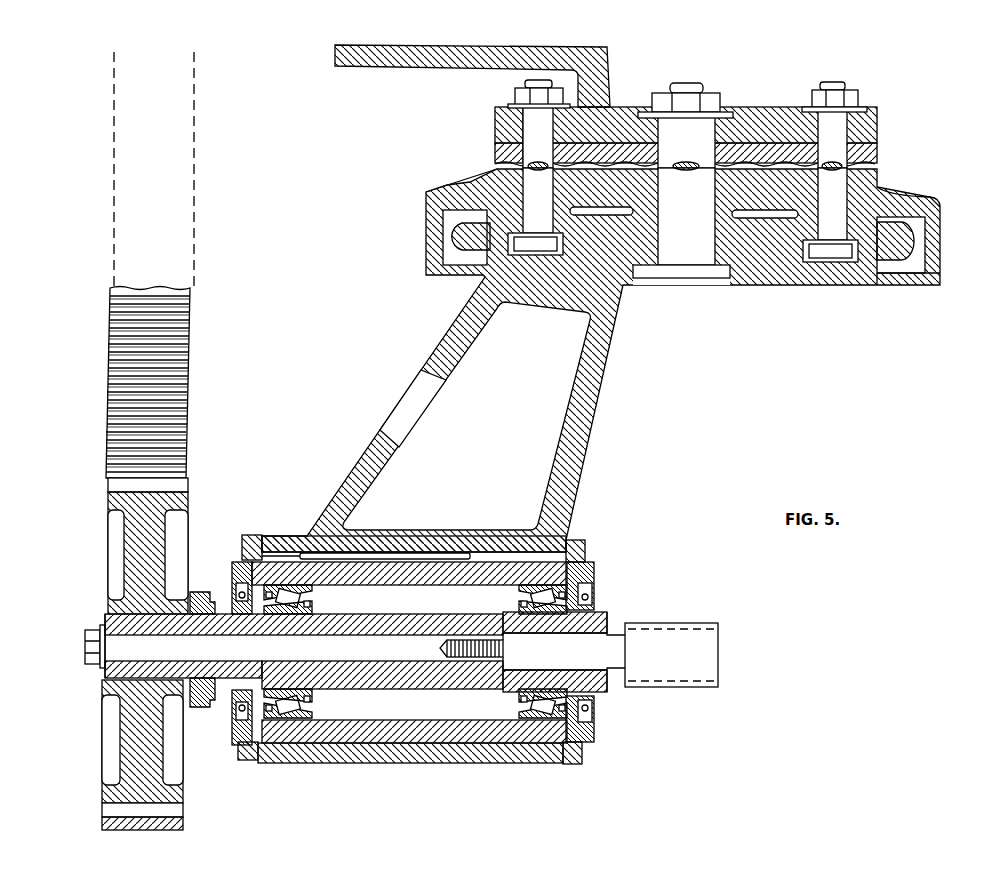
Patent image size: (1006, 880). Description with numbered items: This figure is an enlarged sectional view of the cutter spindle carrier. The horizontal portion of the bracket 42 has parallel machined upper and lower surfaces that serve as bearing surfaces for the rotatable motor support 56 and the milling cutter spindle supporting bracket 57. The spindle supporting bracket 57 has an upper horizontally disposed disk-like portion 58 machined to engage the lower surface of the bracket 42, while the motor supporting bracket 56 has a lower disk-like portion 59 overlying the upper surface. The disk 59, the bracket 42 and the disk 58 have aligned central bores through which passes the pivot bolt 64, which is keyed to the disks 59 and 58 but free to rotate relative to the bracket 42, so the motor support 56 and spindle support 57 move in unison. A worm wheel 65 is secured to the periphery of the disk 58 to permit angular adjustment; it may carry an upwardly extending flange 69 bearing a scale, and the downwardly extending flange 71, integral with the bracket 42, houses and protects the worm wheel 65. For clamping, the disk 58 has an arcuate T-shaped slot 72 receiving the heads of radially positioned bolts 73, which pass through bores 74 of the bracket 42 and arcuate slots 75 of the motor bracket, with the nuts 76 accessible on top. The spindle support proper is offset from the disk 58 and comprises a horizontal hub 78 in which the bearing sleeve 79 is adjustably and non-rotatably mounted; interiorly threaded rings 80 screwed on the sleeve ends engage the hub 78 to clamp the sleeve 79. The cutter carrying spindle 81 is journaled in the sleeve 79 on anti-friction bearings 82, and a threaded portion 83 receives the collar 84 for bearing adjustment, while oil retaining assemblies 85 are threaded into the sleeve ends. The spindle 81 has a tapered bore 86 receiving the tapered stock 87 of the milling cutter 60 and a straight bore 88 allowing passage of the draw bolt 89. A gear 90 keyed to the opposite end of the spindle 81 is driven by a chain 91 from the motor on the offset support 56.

The bracket 42 is at (882, 190).
The motor support 56 is at (405, 62).
The milling cutter spindle supporting bracket 57 is at (595, 418).
The disk-like portion 58 is at (770, 273).
The disk-like portion 59 is at (753, 108).
The milling cutter 60 is at (685, 632).
The pivot bolt 64 is at (683, 271).
The worm wheel 65 is at (936, 249).
The flange 69 is at (905, 218).
The flange 71 is at (941, 281).
The T-shaped slot 72 is at (857, 263).
The bolts 73 is at (832, 234).
The bores 74 is at (515, 182).
The arcuate slots 75 is at (520, 127).
The nuts 76 is at (848, 97).
The hub 78 is at (438, 538).
The bearing sleeve 79 is at (470, 567).
The interiorly threaded rings 80 is at (255, 534).
The cutter carrying spindle 81 is at (403, 630).
The anti-friction bearings 82 is at (300, 599).
The threaded portion 83 is at (226, 595).
The collar 84 is at (210, 708).
The oil retaining assemblies 85 is at (594, 584).
The tapered bore 86 is at (530, 638).
The tapered stock 87 is at (602, 664).
The straight bore 88 is at (346, 666).
The draw bolt 89 is at (84, 649).
The gear 90 is at (118, 505).
The chain 91 is at (107, 369).